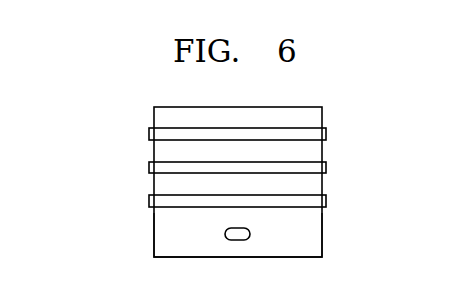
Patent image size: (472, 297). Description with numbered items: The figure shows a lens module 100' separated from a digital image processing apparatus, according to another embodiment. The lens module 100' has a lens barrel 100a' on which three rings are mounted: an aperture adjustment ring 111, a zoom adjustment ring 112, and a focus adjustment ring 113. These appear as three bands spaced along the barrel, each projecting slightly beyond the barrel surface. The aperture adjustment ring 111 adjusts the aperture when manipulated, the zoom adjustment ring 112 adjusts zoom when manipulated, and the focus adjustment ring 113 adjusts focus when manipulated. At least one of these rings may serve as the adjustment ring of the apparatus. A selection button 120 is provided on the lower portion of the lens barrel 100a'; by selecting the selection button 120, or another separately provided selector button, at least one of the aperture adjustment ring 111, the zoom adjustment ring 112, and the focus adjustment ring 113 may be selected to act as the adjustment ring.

The lens module 100' is at (173, 182).
The lens barrel 100a' is at (185, 235).
The aperture adjustment ring 111 is at (326, 133).
The zoom adjustment ring 112 is at (326, 167).
The focus adjustment ring 113 is at (326, 201).
The selection button 120 is at (250, 234).